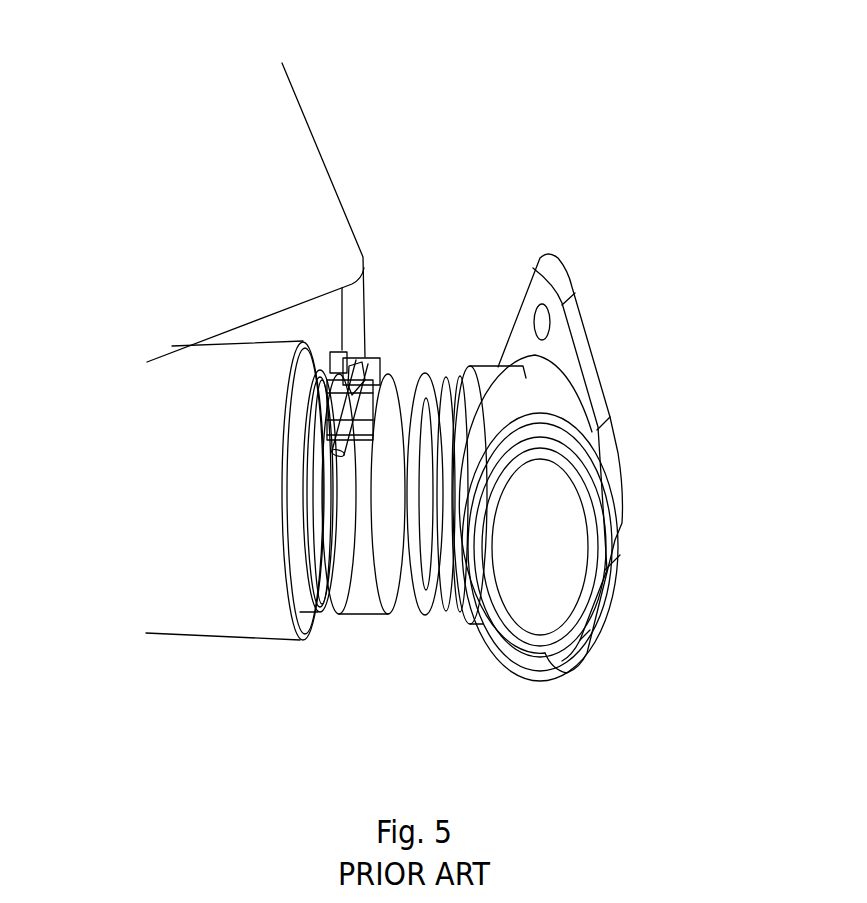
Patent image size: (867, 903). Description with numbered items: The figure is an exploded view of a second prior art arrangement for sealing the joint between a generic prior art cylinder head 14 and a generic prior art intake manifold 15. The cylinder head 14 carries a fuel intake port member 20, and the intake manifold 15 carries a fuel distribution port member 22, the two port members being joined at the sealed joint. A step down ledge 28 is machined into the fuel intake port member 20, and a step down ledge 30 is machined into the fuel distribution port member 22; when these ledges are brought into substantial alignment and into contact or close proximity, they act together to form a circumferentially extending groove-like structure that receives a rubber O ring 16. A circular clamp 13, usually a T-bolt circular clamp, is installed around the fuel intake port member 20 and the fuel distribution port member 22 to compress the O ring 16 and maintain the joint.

The cylinder head 14 is at (186, 382).
The circular clamp 13 is at (367, 390).
The rubber O ring 16 is at (425, 392).
The intake manifold 15 is at (620, 480).
The fuel intake port member 20 is at (302, 600).
The step down ledge 28 is at (315, 585).
The step down ledge 30 is at (442, 583).
The fuel distribution port member 22 is at (453, 605).